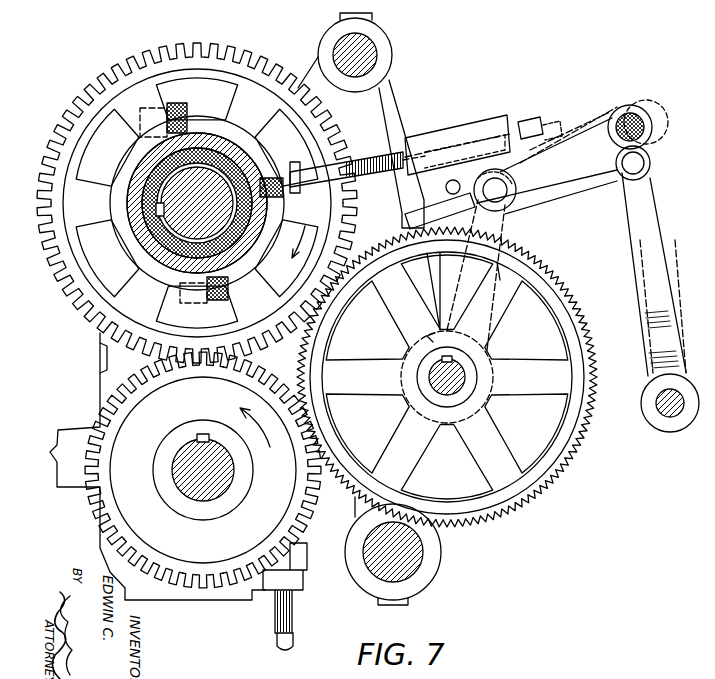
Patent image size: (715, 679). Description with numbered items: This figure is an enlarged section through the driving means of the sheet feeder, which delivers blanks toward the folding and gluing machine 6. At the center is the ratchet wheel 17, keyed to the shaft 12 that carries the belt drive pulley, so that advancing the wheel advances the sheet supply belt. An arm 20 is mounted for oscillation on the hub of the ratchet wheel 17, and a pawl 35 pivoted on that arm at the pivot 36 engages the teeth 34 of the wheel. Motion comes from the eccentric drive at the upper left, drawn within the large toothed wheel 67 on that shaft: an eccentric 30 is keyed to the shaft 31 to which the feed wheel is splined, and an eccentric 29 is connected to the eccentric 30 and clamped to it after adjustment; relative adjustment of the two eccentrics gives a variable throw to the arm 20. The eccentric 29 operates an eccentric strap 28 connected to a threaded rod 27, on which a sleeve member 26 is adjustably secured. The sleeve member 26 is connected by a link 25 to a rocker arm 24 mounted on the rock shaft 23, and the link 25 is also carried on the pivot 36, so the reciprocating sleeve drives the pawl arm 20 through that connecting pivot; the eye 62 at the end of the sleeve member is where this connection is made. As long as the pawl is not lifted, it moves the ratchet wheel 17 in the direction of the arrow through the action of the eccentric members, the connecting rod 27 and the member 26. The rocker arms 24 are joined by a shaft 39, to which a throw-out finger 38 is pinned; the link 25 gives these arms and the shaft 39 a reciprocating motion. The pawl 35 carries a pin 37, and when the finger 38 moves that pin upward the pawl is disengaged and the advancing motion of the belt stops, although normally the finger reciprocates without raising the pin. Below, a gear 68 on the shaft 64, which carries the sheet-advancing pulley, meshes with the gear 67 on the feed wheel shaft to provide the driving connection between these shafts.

The folding and gluing machine 6 is at (417, 565).
The shaft 12 is at (460, 380).
The ratchet wheel 17 is at (450, 382).
The arm 20 is at (502, 232).
The shaft 23 is at (670, 408).
The rocker arm 24 is at (657, 267).
The link 25 is at (612, 185).
The sleeve member 26 is at (472, 128).
The threaded rod 27 is at (362, 160).
The eccentric strap 28 is at (237, 147).
The eccentric 29 is at (140, 227).
The eccentric 30 is at (150, 180).
The shaft 31 is at (194, 203).
The teeth 34 is at (450, 376).
The pawl 35 is at (423, 208).
The pivot 36 is at (530, 123).
The pin 37 is at (446, 186).
The throw-out finger 38 is at (567, 143).
The shaft 39 is at (633, 113).
The eye 62 is at (470, 205).
The shaft 64 is at (220, 482).
The gear 67 is at (85, 85).
The gear 68 is at (103, 412).